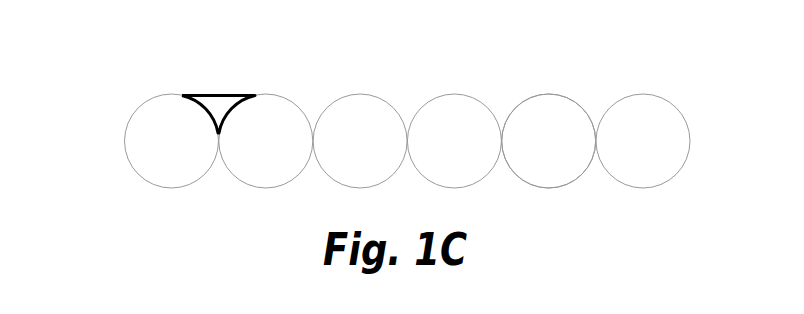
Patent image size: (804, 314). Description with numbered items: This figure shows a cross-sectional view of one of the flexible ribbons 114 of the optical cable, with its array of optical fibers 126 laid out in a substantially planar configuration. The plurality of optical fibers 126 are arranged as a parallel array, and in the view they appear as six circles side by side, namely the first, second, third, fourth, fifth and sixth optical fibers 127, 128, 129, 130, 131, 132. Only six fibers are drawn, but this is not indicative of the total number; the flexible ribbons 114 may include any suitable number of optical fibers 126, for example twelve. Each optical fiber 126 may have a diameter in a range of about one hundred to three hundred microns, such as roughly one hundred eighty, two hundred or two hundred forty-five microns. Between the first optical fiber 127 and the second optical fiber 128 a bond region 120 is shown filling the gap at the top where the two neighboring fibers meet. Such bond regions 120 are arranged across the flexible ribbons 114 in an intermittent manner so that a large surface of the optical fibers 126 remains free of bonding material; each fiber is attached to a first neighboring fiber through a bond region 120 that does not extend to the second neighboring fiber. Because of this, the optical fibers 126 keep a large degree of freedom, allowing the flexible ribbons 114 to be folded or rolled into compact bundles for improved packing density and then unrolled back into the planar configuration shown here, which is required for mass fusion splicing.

The flexible ribbon 114 is at (121, 71).
The bond region 120 is at (217, 93).
The optical fiber 126 is at (546, 84).
The first optical fiber 127 is at (145, 154).
The second optical fiber 128 is at (240, 147).
The third optical fiber 129 is at (343, 146).
The fourth optical fiber 130 is at (435, 146).
The fifth optical fiber 131 is at (534, 154).
The sixth optical fiber 132 is at (626, 146).